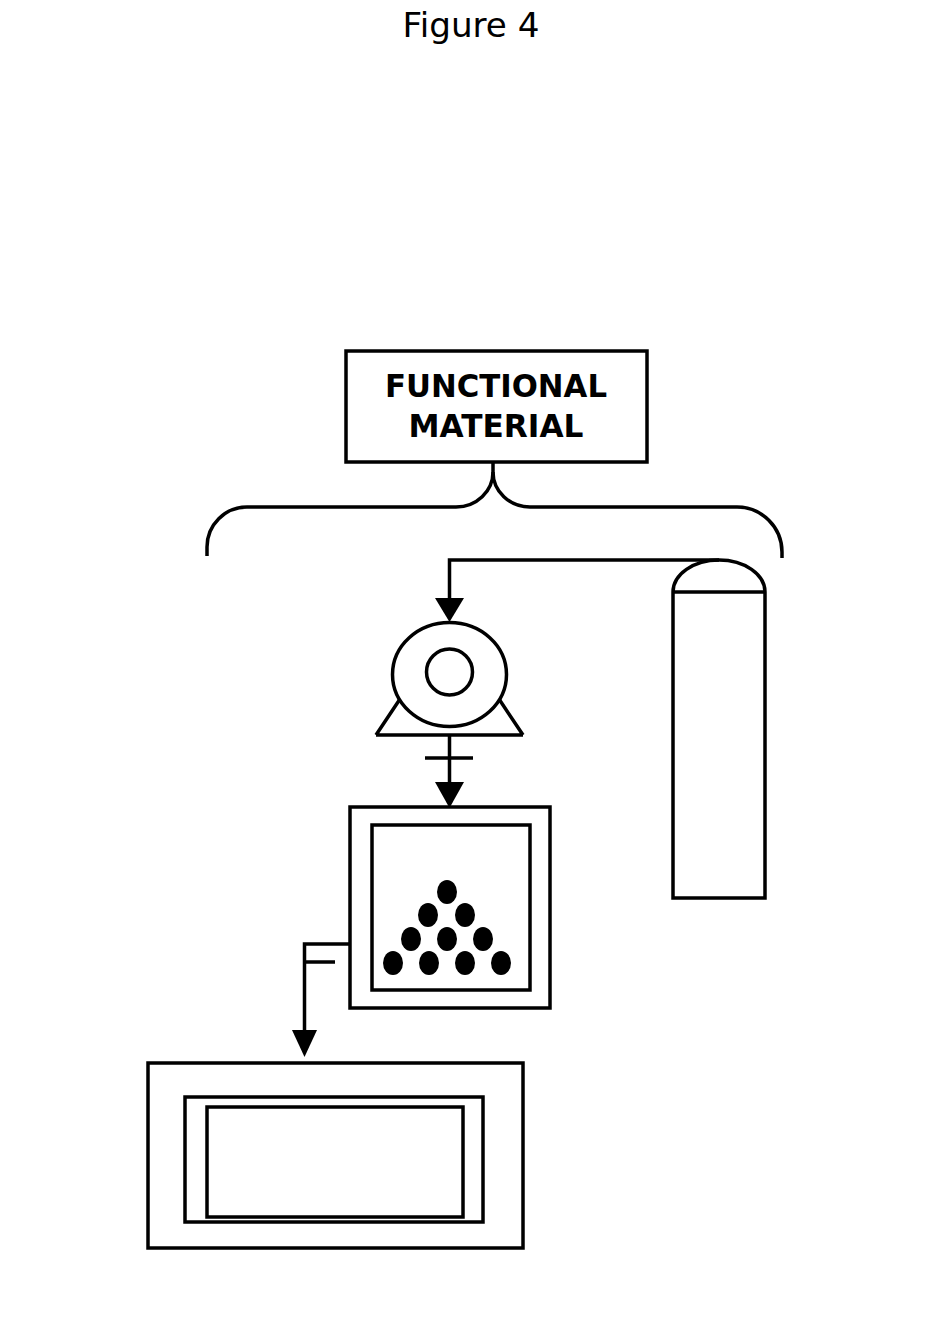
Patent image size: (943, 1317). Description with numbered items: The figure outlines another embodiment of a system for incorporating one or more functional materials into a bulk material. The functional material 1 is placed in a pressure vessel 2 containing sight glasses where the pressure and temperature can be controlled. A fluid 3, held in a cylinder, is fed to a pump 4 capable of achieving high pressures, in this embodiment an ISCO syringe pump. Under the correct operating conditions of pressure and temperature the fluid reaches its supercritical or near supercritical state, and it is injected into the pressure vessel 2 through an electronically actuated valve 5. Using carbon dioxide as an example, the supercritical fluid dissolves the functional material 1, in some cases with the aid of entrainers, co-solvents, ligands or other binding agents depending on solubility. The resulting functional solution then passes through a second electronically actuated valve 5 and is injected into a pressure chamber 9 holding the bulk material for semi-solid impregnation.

The functional material 1 is at (449, 901).
The pressure vessel 2 is at (425, 905).
The fluid 3 is at (755, 729).
The pump 4 is at (430, 679).
The electronically actuated valve 5 is at (371, 896).
The pressure chamber 9 is at (289, 1155).